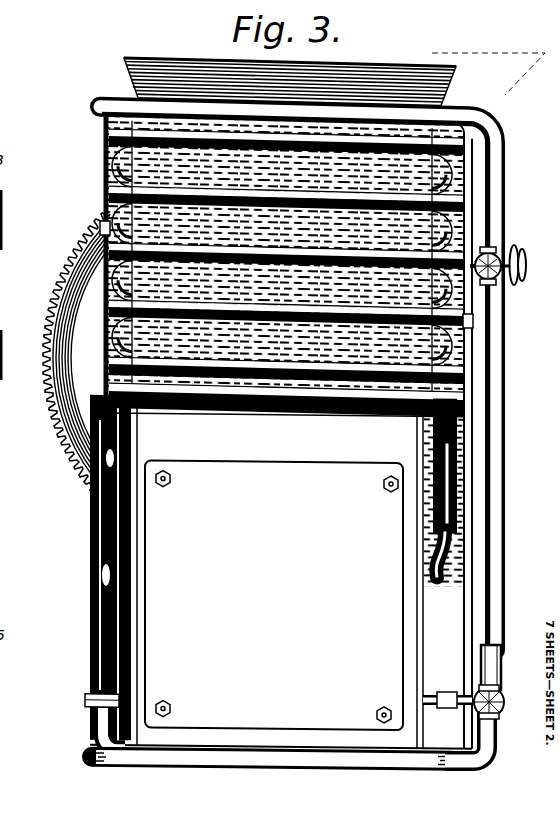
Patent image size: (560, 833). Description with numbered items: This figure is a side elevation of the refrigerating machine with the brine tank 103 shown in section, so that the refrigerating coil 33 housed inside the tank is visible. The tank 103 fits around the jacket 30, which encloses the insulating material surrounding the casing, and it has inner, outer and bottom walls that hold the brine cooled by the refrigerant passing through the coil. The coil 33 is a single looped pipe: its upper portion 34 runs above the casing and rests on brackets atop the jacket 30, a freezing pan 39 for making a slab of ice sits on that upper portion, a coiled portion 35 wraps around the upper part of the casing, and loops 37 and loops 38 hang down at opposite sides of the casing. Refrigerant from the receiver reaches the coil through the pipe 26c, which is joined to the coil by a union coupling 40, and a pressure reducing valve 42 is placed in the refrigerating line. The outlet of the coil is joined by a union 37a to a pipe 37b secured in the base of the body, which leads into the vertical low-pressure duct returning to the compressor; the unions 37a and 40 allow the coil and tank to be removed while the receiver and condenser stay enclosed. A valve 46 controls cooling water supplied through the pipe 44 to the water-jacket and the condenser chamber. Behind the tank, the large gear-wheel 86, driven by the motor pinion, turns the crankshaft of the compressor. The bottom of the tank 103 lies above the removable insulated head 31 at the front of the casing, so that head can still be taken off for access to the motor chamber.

The jacket 30 is at (285, 575).
The removable head 31 is at (274, 595).
The refrigerating coil 33 is at (470, 375).
The upper portion of refrigerating coil 34 is at (456, 107).
The coiled portion of refrigerating coil 35 is at (286, 256).
The loops of refrigerating coil 37 is at (92, 566).
The union 37a is at (92, 708).
The pipe 37b is at (97, 733).
The loops of refrigerating coil 38 is at (470, 503).
The freezing pan 39 is at (386, 70).
The union coupling 40 is at (492, 736).
The pressure reducing valve 42 is at (498, 250).
The pipe 44 is at (497, 672).
The valve 46 is at (499, 702).
The pipe 26c is at (460, 758).
The gear-wheel 86 is at (57, 448).
The brine tank 103 is at (101, 229).